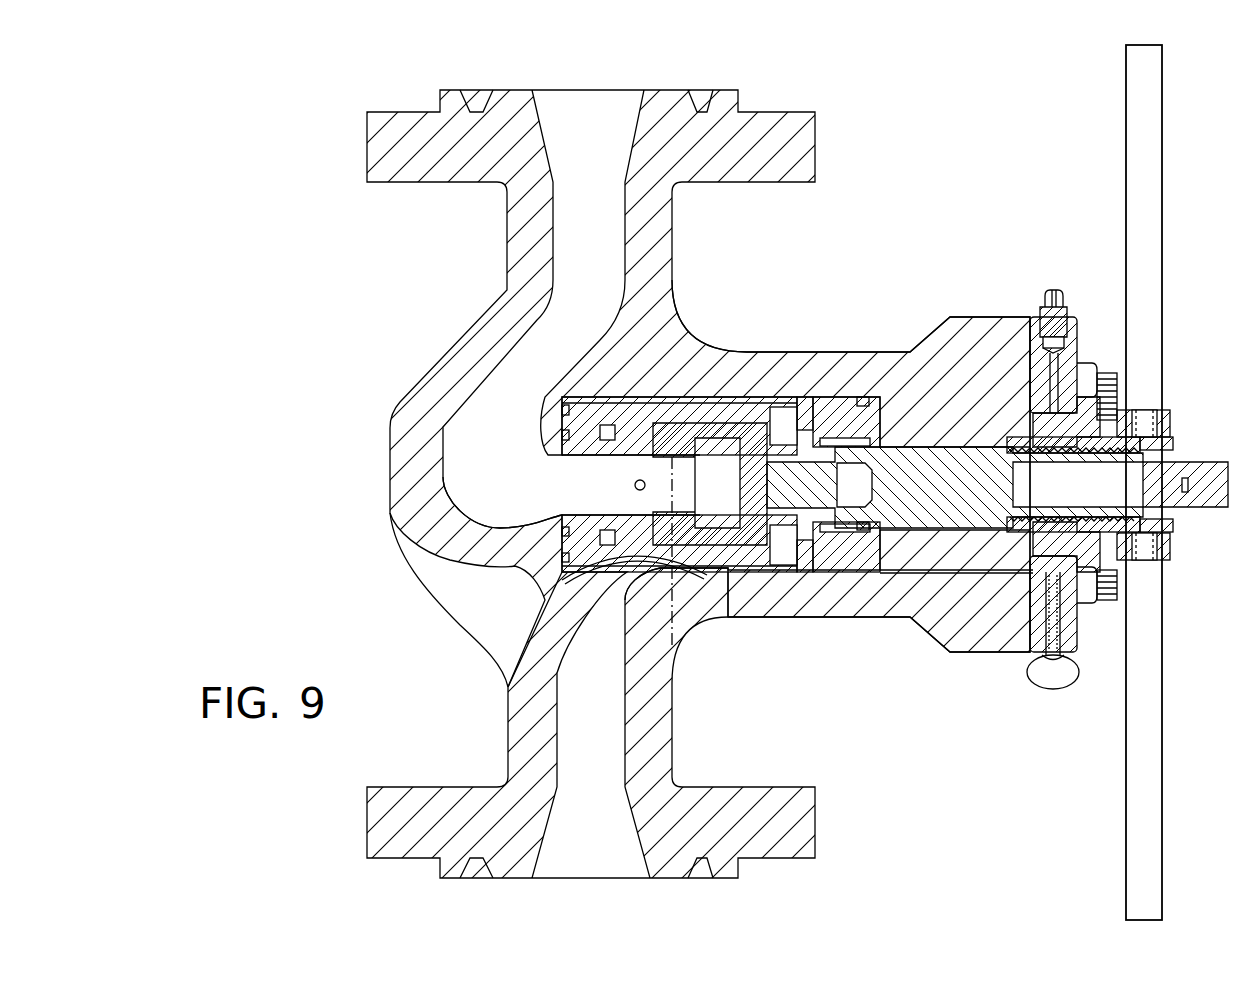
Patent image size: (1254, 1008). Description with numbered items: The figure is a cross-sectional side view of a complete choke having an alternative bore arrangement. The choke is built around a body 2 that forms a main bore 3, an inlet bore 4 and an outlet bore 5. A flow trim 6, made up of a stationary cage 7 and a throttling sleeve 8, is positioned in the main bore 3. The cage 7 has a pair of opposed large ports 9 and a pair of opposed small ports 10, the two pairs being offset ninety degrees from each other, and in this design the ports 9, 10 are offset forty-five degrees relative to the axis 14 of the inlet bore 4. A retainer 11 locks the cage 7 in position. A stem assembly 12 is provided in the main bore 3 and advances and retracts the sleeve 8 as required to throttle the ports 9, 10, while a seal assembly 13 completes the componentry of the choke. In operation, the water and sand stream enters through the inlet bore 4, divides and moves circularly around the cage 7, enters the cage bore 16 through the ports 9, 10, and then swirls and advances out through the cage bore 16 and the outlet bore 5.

The body 2 is at (417, 380).
The main bore 3 is at (790, 430).
The inlet bore 4 is at (637, 615).
The outlet bore 5 is at (533, 482).
The flow trim 6 is at (682, 420).
The stationary cage 7 is at (578, 400).
The throttling sleeve 8 is at (760, 400).
The large ports 9 is at (662, 455).
The small ports 10 is at (634, 486).
The retainer 11 is at (752, 407).
The stem assembly 12 is at (882, 453).
The seal assembly 13 is at (562, 560).
The axis of the inlet bore 14 is at (677, 597).
The cage bore 16 is at (693, 487).